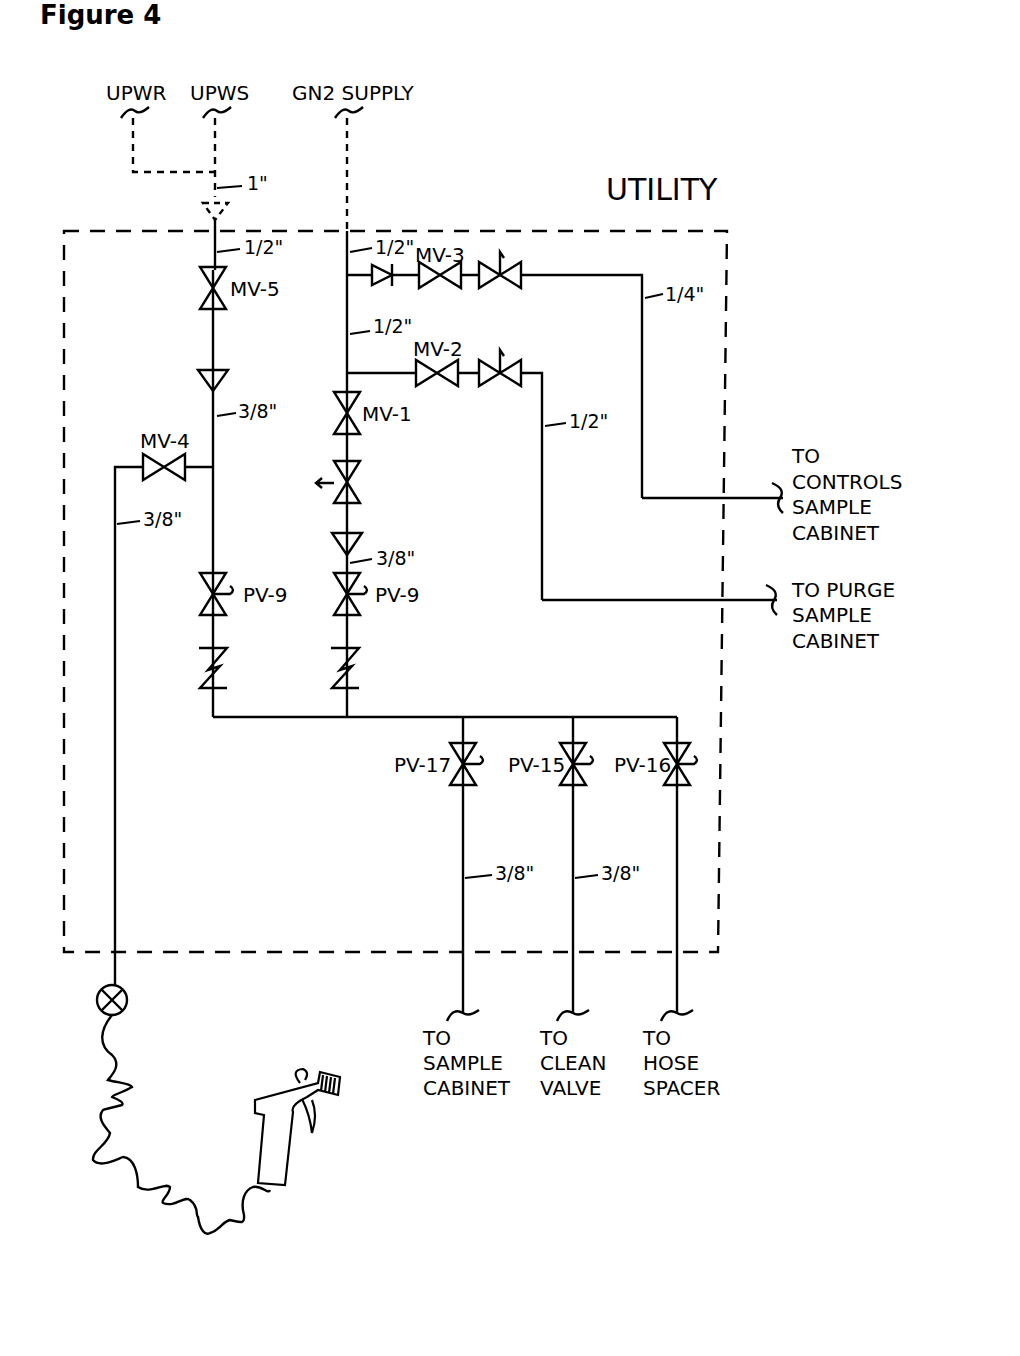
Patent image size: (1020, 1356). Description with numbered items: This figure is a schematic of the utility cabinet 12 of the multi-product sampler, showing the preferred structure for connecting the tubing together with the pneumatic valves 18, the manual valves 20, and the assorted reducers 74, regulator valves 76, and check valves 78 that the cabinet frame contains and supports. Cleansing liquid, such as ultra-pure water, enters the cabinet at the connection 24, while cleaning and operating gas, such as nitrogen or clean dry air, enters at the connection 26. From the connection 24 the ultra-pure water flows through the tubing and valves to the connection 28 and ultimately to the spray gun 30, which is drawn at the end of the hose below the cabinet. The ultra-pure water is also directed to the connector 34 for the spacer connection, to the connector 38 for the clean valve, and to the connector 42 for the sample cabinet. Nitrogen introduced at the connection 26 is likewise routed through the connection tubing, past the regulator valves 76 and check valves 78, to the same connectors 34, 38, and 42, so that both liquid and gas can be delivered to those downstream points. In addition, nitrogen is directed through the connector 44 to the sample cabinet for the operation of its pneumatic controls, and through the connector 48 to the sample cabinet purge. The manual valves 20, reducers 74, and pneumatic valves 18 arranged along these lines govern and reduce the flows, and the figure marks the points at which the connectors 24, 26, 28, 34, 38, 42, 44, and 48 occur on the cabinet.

The utility cabinet 12 is at (757, 365).
The connection 24 is at (212, 232).
The connection 26 is at (350, 232).
The reducer 74 is at (205, 388).
The manual valve 20 is at (353, 430).
The regulator valve 76 is at (520, 276).
The check valve 78 is at (205, 680).
The connector 44 is at (738, 498).
The connector 48 is at (725, 606).
The pneumatic valve 18 is at (456, 778).
The connector 42 is at (461, 990).
The connector 38 is at (574, 994).
The connector 34 is at (680, 998).
The connection 28 is at (115, 968).
The spray gun 30 is at (273, 1093).